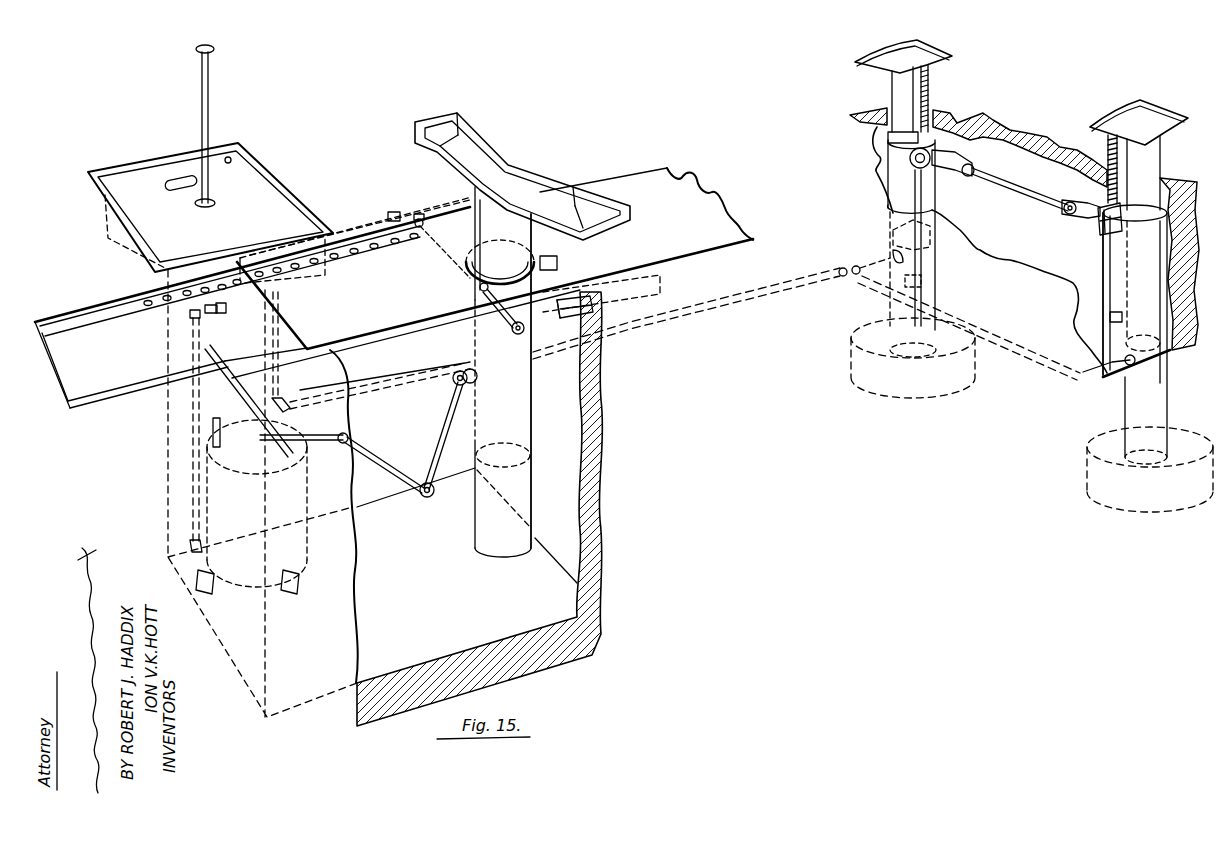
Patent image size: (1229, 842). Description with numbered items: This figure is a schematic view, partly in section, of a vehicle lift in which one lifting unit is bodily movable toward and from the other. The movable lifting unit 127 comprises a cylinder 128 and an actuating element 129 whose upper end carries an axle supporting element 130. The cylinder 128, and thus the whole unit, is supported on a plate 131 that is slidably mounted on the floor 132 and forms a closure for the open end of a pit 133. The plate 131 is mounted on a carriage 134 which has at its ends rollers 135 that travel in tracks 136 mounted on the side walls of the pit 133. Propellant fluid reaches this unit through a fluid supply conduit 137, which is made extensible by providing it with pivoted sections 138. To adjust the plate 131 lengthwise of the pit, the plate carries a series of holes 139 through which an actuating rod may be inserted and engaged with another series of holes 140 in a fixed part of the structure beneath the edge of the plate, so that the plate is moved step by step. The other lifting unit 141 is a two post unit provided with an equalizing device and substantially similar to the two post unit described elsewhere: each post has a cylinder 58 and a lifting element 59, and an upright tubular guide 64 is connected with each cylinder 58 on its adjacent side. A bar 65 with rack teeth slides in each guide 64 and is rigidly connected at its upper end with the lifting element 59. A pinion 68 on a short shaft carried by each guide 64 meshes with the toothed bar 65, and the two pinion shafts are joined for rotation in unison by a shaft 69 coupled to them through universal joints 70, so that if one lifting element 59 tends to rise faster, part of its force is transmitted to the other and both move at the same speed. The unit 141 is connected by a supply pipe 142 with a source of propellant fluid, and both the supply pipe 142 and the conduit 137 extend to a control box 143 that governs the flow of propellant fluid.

The cylinder 58 is at (893, 303).
The lifting element 59 is at (898, 90).
The upright tubular guide 64 is at (930, 193).
The bar 65 is at (917, 92).
The pinion 68 is at (1100, 225).
The shaft 69 is at (1023, 190).
The universal joint 70 is at (962, 163).
The lifting unit 127 is at (448, 542).
The cylinder 128 is at (475, 545).
The actuating element 129 is at (525, 383).
The axle supporting element 130 is at (482, 134).
The plate 131 is at (693, 213).
The floor 132 is at (110, 383).
The pit 133 is at (557, 507).
The carriage 134 is at (440, 249).
The roller 135 is at (513, 333).
The track 136 is at (392, 212).
The fluid supply conduit 137 is at (338, 450).
The pivoted section 138 is at (398, 465).
The hole 139 is at (388, 240).
The hole 140 is at (168, 301).
The lifting unit 141 is at (1032, 394).
The supply pipe 142 is at (767, 293).
The control box 143 is at (253, 192).